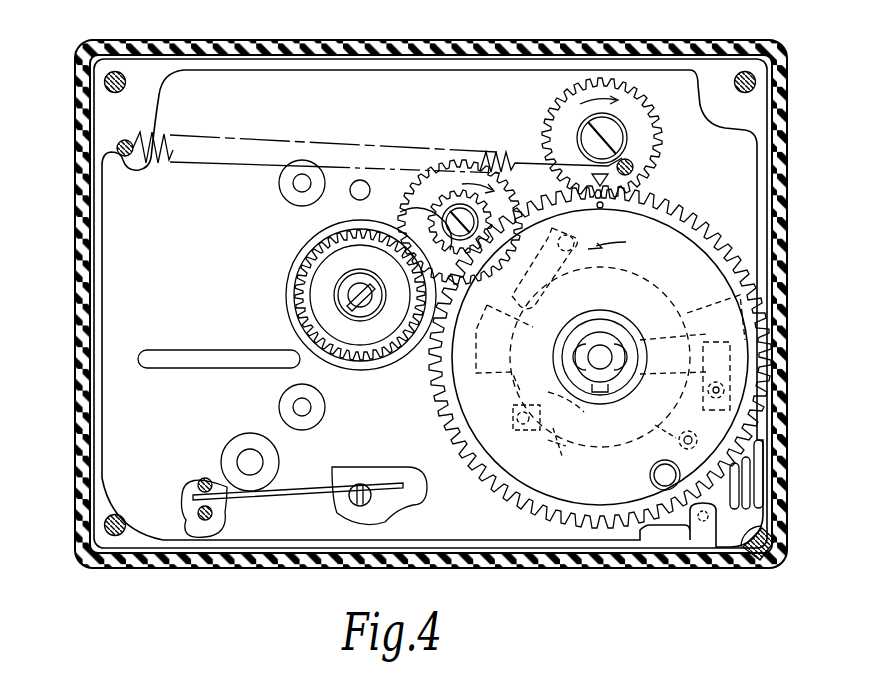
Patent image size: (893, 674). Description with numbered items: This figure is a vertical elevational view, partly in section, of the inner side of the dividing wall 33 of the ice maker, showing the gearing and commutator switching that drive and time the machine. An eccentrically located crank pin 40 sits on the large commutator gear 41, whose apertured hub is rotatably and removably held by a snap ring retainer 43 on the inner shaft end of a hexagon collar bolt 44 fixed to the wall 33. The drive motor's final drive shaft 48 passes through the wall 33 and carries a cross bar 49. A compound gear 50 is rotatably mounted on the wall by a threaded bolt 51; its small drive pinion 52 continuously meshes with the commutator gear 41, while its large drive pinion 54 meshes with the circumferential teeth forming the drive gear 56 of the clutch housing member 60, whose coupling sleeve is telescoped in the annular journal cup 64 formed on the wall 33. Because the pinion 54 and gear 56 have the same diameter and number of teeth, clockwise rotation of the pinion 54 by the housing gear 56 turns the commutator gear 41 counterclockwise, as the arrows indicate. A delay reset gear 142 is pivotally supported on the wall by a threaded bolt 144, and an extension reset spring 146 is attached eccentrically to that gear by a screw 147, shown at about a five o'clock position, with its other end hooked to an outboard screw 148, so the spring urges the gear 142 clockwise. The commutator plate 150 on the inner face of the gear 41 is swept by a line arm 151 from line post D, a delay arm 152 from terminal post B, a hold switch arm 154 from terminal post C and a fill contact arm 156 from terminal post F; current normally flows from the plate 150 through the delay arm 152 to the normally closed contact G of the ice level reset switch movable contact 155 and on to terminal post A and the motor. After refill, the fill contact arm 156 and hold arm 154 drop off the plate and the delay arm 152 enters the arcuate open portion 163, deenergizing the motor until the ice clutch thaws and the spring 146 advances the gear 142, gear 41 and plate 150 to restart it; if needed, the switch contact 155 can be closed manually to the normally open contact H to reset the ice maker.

The dividing wall 33 is at (237, 88).
The crank pin 40 is at (650, 476).
The commutator gear 41 is at (673, 238).
The snap ring retainer 43 is at (616, 372).
The hexagon collar bolt 44 is at (590, 356).
The final drive shaft 48 is at (360, 305).
The cross bar 49 is at (368, 284).
The compound gear 50 is at (400, 180).
The threaded bolt 51 is at (450, 218).
The small drive pinion 52 is at (400, 212).
The large drive pinion 54 is at (454, 180).
The drive gear 56 is at (300, 264).
The clutch housing member 60 is at (300, 294).
The annular journal cup 64 is at (292, 315).
The delay reset gear 142 is at (628, 105).
The threaded bolt 144 is at (585, 136).
The extension reset spring 146 is at (166, 148).
The screw 147 is at (635, 166).
The outboard screw 148 is at (125, 140).
The commutator plate 150 is at (667, 294).
The line arm 151 is at (673, 348).
The delay arm 152 is at (558, 451).
The hold switch arm 154 is at (600, 357).
The ice level reset switch movable contact 155 is at (233, 495).
The fill contact arm 156 is at (748, 375).
The arcuate open portion 163 is at (552, 394).
The terminal post A is at (358, 484).
The terminal post B is at (520, 435).
The terminal post C is at (569, 267).
The line post D is at (660, 427).
The terminal post F is at (746, 450).
The normally closed contact post G is at (200, 480).
The normally open contact H is at (205, 520).